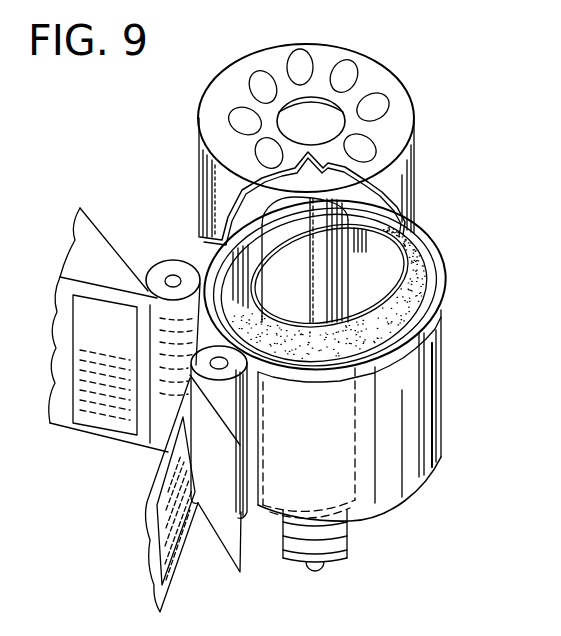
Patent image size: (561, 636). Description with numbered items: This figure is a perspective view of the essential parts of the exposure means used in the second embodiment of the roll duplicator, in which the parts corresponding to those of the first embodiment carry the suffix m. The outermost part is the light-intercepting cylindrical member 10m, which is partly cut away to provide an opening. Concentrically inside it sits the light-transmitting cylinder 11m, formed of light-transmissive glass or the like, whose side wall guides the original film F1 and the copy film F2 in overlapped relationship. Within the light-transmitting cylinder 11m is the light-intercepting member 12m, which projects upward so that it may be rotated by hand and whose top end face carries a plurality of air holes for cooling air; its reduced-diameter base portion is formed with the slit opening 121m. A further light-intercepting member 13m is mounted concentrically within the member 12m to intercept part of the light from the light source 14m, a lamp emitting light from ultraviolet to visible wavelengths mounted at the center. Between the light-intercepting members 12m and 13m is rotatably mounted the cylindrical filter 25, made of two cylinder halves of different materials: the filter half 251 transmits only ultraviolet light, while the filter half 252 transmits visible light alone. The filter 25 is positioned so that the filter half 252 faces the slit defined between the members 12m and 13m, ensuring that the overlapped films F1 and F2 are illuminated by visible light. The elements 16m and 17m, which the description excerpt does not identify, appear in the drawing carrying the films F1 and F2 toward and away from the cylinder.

The light-intercepting cylindrical member 10m is at (427, 390).
The light-transmitting cylinder 11m is at (427, 323).
The light-intercepting member 12m is at (408, 290).
The slit opening 121m is at (350, 70).
The light-intercepting member 13m is at (400, 232).
The light source 14m is at (322, 218).
The feed roller 16m is at (167, 270).
The take-up roller 17m is at (237, 402).
The cylindrical filter 25 is at (400, 270).
The filter half 251 is at (310, 352).
The filter half 252 is at (260, 333).
The original film F1 is at (63, 413).
The copy film F2 is at (95, 228).